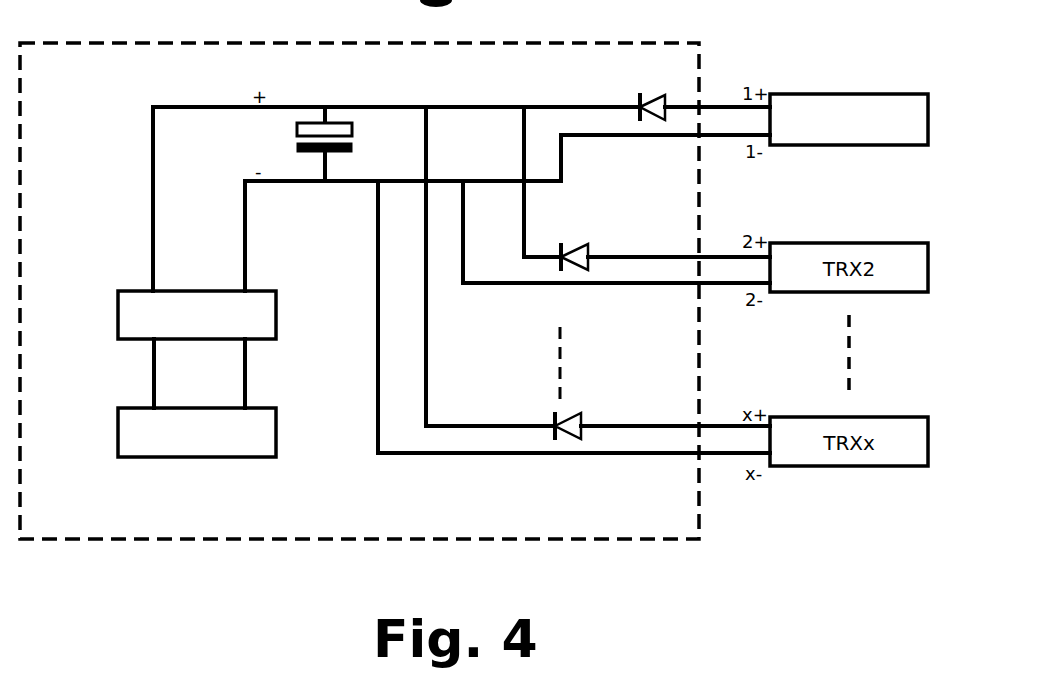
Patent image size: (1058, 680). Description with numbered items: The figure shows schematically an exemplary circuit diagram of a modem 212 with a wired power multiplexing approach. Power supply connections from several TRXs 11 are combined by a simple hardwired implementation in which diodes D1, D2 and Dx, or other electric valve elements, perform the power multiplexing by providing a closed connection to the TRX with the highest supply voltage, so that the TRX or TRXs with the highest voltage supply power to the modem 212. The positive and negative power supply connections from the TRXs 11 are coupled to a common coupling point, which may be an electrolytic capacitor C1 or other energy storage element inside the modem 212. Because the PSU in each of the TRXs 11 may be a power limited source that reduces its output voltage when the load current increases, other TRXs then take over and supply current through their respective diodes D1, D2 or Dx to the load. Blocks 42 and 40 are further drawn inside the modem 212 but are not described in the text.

The modem 212 is at (80, 84).
The TRXs 11 is at (804, 94).
The power supply circuit 42 is at (197, 315).
The controller 40 is at (197, 432).
The electrolytic capacitor C1 is at (291, 140).
The diode D1 is at (638, 97).
The diode D2 is at (590, 242).
The diode Dx is at (585, 411).